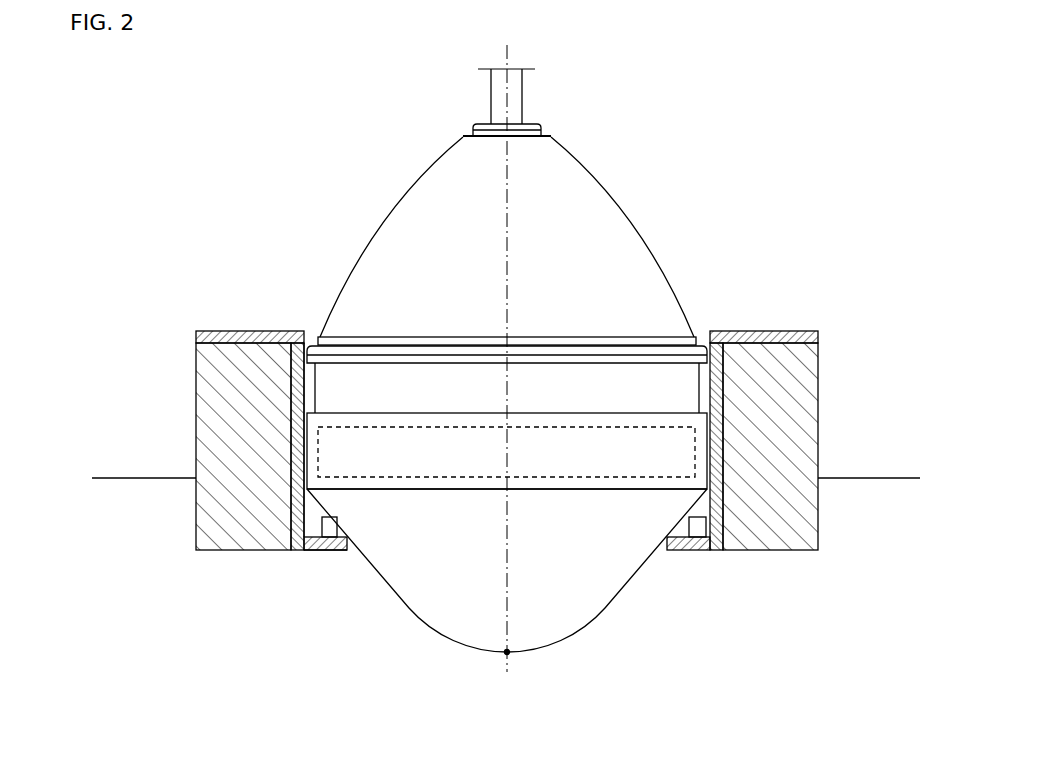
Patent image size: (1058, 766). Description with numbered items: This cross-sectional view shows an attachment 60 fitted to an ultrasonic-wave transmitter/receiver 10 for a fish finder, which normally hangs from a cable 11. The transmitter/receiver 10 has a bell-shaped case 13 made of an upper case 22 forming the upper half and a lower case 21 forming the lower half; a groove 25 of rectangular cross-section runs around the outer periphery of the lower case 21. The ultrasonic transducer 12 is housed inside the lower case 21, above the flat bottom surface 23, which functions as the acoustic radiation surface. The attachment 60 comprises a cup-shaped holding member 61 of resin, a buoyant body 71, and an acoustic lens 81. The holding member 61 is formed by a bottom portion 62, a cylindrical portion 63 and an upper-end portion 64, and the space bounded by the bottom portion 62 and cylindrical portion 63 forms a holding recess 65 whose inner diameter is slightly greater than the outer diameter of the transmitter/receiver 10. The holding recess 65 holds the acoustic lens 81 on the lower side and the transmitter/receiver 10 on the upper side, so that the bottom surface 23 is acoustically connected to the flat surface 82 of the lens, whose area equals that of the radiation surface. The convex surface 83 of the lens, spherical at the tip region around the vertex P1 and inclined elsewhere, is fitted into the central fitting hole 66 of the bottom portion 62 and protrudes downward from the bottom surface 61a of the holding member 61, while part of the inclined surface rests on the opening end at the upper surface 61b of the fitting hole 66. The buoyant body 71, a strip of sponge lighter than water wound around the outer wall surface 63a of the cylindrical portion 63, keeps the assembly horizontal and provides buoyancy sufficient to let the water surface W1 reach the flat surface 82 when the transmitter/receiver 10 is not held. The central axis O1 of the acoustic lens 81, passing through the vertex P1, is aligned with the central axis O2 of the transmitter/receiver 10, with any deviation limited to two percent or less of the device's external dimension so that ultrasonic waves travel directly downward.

The central axis of the ultrasonic-wave transmitter/receiver O2 is at (509, 53).
The cable 11 is at (500, 97).
The ultrasonic-wave transmitter/receiver 10 is at (507, 372).
The upper case 22 is at (383, 235).
The case 13 is at (605, 222).
The groove 25 is at (574, 372).
The bottom surface 23 is at (433, 491).
The lower case 21 is at (389, 490).
The flat surface 82 is at (582, 487).
The ultrasonic transducer 12 is at (528, 490).
The acoustic lens 81 is at (410, 598).
The convex surface 83 is at (613, 606).
The vertex of the acoustic lens P1 is at (505, 652).
The central axis of the acoustic lens O1 is at (512, 665).
The attachment 60 is at (199, 181).
The water surface W1 is at (908, 477).
The holding member 61 is at (250, 451).
The upper-end portion 64 is at (766, 447).
The buoyant body 71 is at (218, 406).
The cylindrical portion 63 is at (219, 440).
The outer wall surface 63a is at (289, 452).
The holding recess 65 is at (712, 330).
The bottom portion 62 is at (323, 545).
The fitting hole 66 is at (663, 545).
The bottom surface of the holding member 61a is at (309, 553).
The upper surface 61b is at (327, 530).